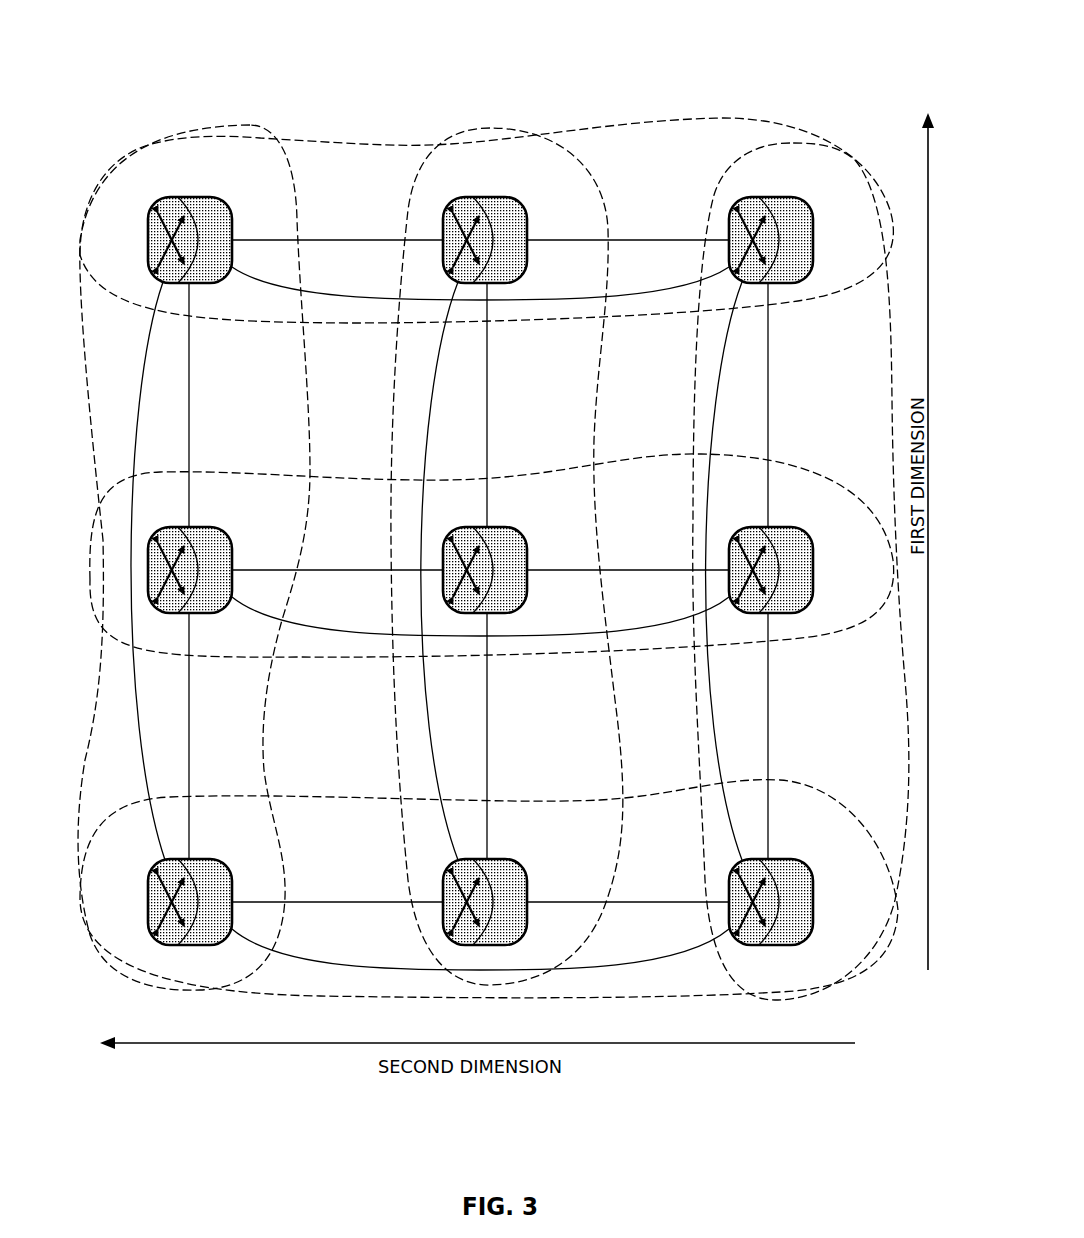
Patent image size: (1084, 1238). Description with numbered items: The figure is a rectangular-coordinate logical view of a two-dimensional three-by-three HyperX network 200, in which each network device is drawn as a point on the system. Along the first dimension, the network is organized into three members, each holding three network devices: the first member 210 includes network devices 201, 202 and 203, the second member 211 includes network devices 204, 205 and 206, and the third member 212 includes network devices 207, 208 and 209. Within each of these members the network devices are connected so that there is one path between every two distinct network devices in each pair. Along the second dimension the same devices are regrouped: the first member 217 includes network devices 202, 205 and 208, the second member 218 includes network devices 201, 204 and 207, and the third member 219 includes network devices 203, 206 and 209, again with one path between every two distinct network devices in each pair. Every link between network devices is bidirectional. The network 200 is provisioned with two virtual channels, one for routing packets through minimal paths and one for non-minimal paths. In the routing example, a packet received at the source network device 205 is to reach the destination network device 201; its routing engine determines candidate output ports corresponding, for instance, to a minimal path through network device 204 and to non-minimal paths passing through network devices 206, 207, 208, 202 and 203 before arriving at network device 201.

The two-dimensional 3:3 HyperX network 200 is at (334, 69).
The network device 201 is at (280, 196).
The network device 202 is at (268, 855).
The network device 203 is at (273, 526).
The network device 204 is at (863, 196).
The network device 205 is at (851, 856).
The network device 206 is at (868, 528).
The network device 207 is at (581, 196).
The network device 208 is at (571, 873).
The network device 209 is at (573, 526).
The first member of the first dimension 210 is at (295, 110).
The second member of the first dimension 211 is at (544, 110).
The third member of the first dimension 212 is at (869, 143).
The first member of the second dimension 217 is at (881, 788).
The second member of the second dimension 218 is at (734, 100).
The third member of the second dimension 219 is at (863, 454).